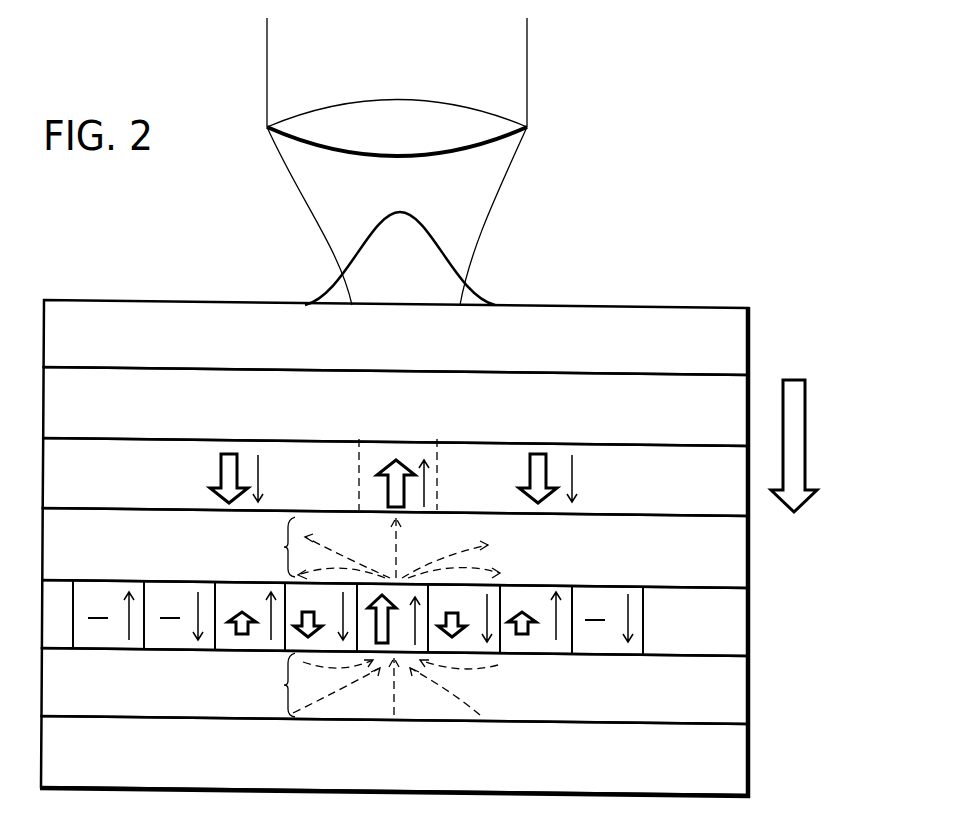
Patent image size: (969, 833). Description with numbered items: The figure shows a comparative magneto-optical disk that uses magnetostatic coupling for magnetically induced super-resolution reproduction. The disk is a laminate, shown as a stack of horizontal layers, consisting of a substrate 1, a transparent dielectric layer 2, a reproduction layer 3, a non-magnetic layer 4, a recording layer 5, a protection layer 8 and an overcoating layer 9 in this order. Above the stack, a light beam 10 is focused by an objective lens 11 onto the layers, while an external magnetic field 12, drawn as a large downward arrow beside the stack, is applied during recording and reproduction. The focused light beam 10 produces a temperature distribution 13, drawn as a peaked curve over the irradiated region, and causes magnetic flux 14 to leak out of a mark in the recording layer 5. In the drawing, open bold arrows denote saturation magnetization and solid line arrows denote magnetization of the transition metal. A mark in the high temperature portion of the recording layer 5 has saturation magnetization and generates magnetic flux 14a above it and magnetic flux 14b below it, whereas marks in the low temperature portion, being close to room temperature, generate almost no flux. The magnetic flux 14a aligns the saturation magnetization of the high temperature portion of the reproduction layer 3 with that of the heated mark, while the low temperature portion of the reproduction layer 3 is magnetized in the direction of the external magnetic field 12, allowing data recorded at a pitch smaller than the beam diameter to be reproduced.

The substrate 1 is at (742, 352).
The transparent dielectric layer 2 is at (728, 425).
The reproduction layer 3 is at (725, 488).
The non-magnetic layer 4 is at (730, 560).
The recording layer 5 is at (730, 630).
The protection layer 8 is at (730, 698).
The overcoating layer 9 is at (726, 760).
The light beam 10 is at (527, 37).
The objective lens 11 is at (485, 132).
The external magnetic field 12 is at (804, 415).
The temperature distribution 13 is at (433, 250).
The magnetic flux 14 is at (238, 665).
The magnetic flux 14a is at (366, 548).
The magnetic flux 14b is at (365, 685).